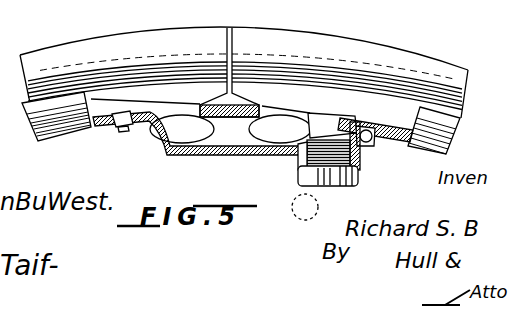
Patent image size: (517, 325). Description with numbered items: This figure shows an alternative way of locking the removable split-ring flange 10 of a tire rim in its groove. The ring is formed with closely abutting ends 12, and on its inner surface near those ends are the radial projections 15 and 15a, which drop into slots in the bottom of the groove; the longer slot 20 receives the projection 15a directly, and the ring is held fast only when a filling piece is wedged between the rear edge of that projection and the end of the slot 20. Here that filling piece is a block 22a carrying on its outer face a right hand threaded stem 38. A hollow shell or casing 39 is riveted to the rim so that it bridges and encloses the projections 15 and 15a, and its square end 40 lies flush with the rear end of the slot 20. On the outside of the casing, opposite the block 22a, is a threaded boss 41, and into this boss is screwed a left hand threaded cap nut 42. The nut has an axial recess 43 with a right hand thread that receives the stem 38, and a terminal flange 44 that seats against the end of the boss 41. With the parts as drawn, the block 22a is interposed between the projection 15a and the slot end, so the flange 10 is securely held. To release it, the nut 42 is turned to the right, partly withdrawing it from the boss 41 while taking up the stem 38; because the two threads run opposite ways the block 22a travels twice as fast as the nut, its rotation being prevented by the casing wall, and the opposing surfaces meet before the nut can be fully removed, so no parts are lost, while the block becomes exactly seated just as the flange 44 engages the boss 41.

The removable flange 10 is at (445, 73).
The abutting ends of the ring 12 is at (230, 29).
The radial projection 15 is at (162, 128).
The radial projection 15a is at (280, 129).
The slot 20 is at (193, 131).
The block 22a is at (342, 125).
The right hand threaded stem 38 is at (368, 145).
The hollow shell or casing 39 is at (223, 155).
The square end 40 is at (358, 158).
The threaded boss 41 is at (300, 161).
The left hand threaded cap nut 42 is at (357, 181).
The axial recess 43 is at (317, 184).
The terminal flange 44 is at (345, 185).